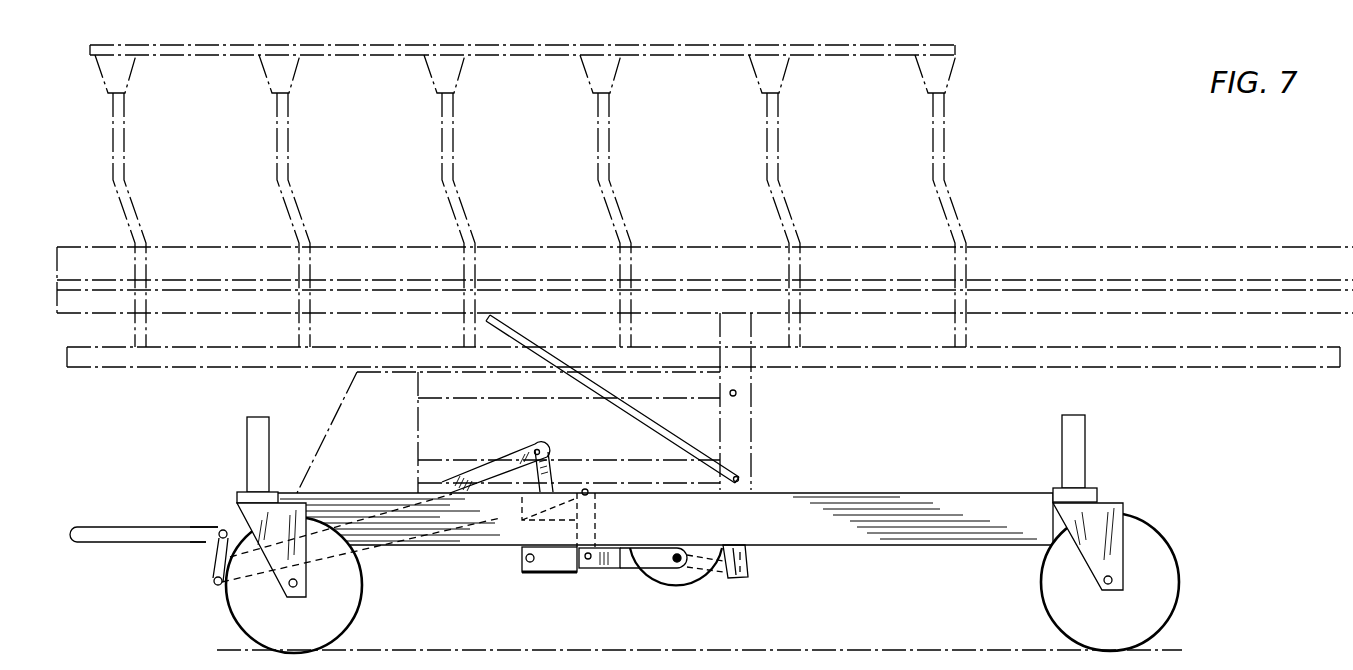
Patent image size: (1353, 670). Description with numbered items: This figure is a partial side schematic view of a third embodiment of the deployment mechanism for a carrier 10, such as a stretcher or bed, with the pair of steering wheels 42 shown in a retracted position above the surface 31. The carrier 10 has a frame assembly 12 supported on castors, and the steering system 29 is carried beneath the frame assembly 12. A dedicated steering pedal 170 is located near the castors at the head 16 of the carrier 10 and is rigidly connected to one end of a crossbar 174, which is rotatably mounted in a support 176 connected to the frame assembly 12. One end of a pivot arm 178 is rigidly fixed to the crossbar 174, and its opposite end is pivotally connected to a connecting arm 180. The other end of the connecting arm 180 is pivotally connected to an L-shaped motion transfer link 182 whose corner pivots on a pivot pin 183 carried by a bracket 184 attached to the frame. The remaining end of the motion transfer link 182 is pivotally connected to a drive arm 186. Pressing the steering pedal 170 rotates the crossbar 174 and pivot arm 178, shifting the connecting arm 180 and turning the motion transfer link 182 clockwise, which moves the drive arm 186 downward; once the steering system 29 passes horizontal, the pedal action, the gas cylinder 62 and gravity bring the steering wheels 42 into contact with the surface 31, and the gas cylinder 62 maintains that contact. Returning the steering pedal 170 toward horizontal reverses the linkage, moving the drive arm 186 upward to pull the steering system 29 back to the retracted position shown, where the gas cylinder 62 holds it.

The carrier 10 is at (1057, 181).
The head 16 is at (190, 203).
The frame assembly 12 is at (850, 493).
The steering system 29 is at (595, 583).
The surface 31 is at (958, 646).
The pair of steering wheels 42 is at (704, 599).
The gas cylinder 62 is at (745, 580).
The steering pedal 170 is at (135, 526).
The crossbar 174 is at (205, 543).
The support 176 is at (238, 537).
The pivot arm 178 is at (215, 563).
The connecting arm 180 is at (478, 466).
The motion transfer link 182 is at (548, 464).
The pivot pin 183 is at (527, 518).
The bracket 184 is at (528, 525).
The drive arm 186 is at (598, 517).